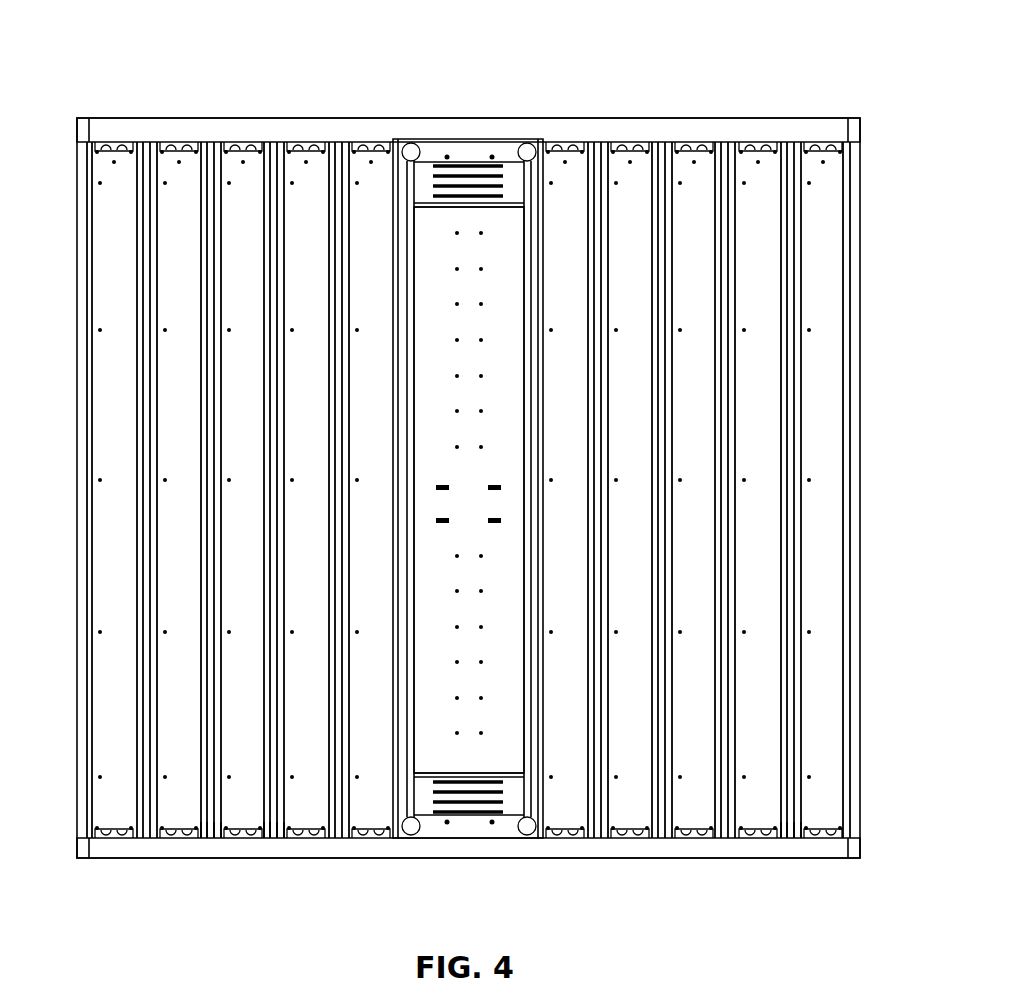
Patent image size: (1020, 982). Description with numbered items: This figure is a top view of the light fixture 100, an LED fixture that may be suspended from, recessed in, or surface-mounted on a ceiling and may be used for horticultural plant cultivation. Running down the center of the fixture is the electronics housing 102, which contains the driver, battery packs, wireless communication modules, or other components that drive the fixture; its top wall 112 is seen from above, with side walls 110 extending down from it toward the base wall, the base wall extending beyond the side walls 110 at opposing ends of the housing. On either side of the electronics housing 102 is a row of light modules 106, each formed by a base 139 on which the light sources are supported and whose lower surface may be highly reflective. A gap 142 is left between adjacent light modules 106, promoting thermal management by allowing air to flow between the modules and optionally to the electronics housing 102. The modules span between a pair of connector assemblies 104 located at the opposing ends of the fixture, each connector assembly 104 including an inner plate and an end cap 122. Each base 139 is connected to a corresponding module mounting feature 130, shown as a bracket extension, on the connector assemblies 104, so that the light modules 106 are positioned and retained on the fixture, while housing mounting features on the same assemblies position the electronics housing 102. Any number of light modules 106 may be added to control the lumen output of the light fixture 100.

The light fixture 100 is at (109, 42).
The electronics housing 102 is at (508, 168).
The connector assembly 104 is at (660, 130).
The light module 106 is at (328, 140).
The side wall 110 is at (450, 185).
The top wall 112 is at (433, 738).
The end cap 122 is at (822, 130).
The module mounting feature 130 is at (180, 142).
The base 139 is at (160, 312).
The gap 142 is at (210, 838).